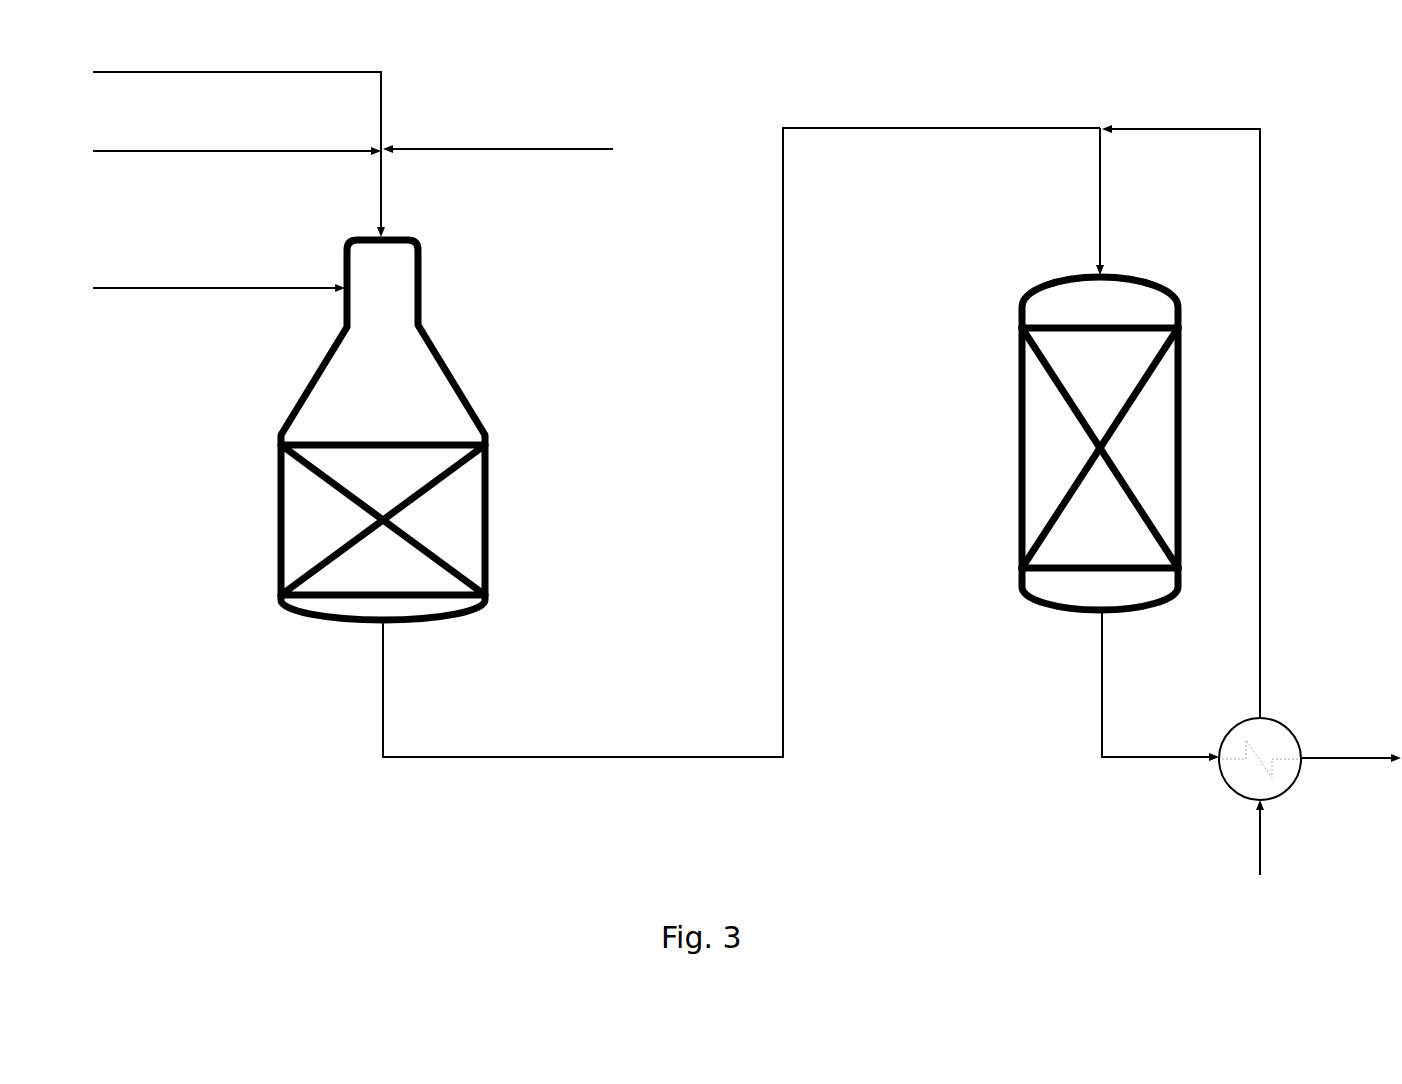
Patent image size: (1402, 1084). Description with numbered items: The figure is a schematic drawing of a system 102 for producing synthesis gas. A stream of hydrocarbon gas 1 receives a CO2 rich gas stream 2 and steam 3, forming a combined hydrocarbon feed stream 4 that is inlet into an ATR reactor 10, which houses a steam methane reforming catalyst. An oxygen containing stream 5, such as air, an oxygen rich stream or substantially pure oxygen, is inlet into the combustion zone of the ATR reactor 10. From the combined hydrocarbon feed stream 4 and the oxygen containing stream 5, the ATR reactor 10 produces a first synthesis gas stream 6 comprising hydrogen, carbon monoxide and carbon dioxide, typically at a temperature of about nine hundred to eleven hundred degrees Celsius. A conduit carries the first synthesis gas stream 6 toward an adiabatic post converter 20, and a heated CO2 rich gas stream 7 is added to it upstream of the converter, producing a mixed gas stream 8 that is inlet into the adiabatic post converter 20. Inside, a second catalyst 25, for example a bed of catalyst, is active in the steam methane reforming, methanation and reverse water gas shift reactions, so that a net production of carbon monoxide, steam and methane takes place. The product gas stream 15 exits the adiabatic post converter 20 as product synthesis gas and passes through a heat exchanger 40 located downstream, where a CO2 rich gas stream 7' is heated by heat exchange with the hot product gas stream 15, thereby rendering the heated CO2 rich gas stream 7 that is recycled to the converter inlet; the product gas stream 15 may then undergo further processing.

The hydrocarbon gas stream 1 is at (221, 139).
The CO2 rich gas stream 2 is at (219, 161).
The steam 3 is at (498, 123).
The combined hydrocarbon feed stream 4 is at (397, 189).
The oxygen containing stream 5 is at (201, 267).
The first synthesis gas stream 6 is at (741, 442).
The heated CO2 rich gas stream 7 is at (1181, 421).
The CO2 rich gas stream 7' is at (1242, 856).
The mixed gas stream 8 is at (1075, 201).
The ATR reactor 10 is at (480, 396).
The product gas stream 15 is at (1251, 708).
The adiabatic post converter 20 is at (1010, 337).
The second catalyst 25 is at (1167, 443).
The heat exchanger 40 is at (1275, 707).
The system 102 is at (950, 792).